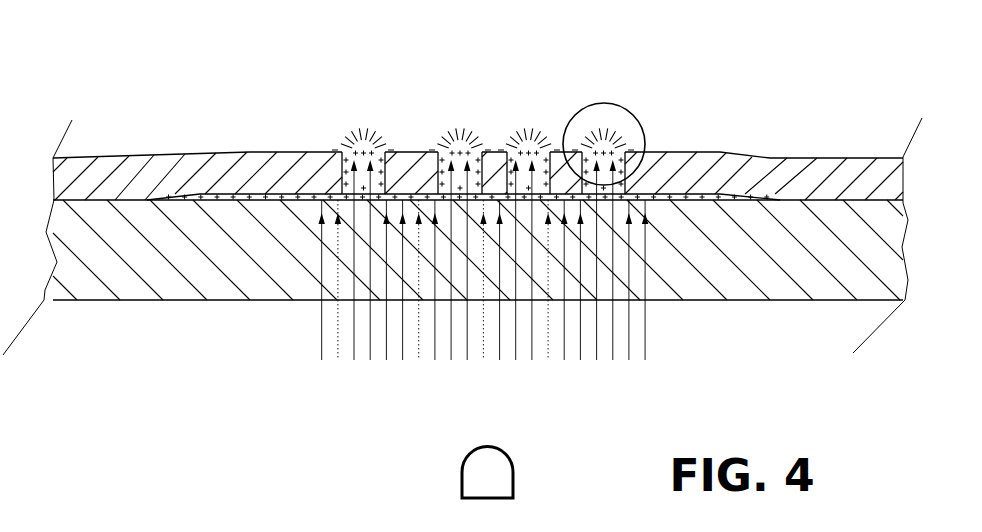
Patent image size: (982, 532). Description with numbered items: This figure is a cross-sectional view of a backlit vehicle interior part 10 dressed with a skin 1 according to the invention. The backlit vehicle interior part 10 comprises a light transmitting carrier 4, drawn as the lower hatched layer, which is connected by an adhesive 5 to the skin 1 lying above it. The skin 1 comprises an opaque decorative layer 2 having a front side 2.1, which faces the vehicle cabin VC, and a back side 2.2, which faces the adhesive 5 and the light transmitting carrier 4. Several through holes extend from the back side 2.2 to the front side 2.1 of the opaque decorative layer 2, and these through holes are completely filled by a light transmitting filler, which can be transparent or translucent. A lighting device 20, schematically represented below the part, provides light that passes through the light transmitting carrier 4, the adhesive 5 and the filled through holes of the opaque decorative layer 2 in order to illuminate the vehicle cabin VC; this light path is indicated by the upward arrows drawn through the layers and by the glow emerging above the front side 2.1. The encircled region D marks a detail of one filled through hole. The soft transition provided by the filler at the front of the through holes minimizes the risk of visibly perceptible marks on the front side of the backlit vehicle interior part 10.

The backlit vehicle interior part 10 is at (218, 88).
The skin 1 is at (110, 173).
The opaque decorative layer 2 is at (823, 175).
The front side 2.1 is at (700, 152).
The back side 2.2 is at (832, 202).
The light transmitting carrier 4 is at (103, 270).
The adhesive 5 is at (83, 202).
The lighting device 20 is at (475, 468).
The detail region D is at (601, 131).
The vehicle cabin VC is at (427, 48).